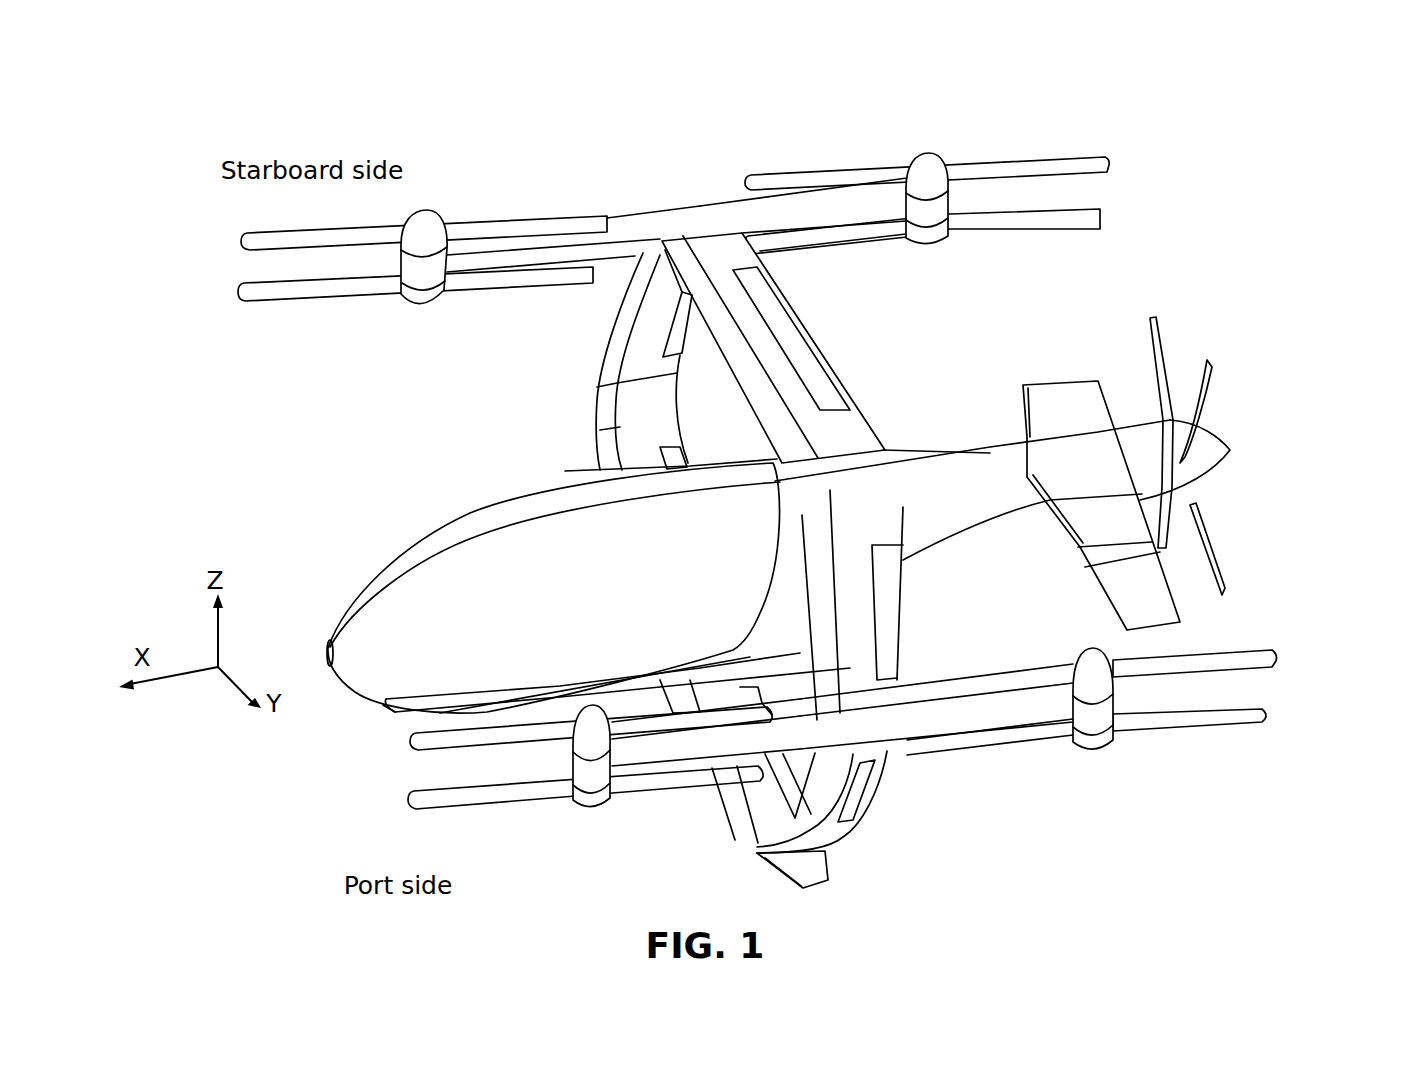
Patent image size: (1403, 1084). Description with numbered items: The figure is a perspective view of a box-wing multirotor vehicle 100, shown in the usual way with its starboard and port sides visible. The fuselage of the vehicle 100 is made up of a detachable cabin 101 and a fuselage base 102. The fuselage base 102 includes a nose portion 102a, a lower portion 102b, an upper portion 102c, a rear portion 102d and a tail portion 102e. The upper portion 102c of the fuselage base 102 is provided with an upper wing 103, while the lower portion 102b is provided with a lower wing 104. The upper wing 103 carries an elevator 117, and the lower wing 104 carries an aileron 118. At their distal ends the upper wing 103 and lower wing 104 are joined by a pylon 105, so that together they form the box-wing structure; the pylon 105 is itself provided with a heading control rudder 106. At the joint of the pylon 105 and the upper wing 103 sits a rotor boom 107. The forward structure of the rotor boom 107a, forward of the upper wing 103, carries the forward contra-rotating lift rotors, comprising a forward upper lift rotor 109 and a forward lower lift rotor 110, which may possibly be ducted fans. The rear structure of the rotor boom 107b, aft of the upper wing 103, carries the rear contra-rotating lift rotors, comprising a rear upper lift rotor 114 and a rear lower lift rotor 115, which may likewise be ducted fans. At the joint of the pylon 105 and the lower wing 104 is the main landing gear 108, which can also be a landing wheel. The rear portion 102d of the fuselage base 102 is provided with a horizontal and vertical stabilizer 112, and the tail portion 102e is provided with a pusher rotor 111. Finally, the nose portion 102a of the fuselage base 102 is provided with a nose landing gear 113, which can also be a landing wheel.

The box-wing multirotor vehicle 100 is at (530, 120).
The detachable cabin 101 is at (388, 567).
The fuselage base 102 is at (978, 338).
The nose portion 102a is at (500, 703).
The lower portion 102b is at (753, 648).
The upper portion 102c is at (863, 477).
The rear portion 102d is at (1028, 453).
The tail portion 102e is at (1148, 453).
The upper wing 103 is at (757, 262).
The lower wing 104 is at (600, 470).
The pylon 105 is at (603, 370).
The heading control rudder 106 is at (670, 345).
The rotor boom 107 is at (703, 190).
The forward structure of the rotor boom 107a is at (520, 245).
The rear structure of the rotor boom 107b is at (883, 210).
The main landing gear 108 is at (683, 427).
The forward upper lift rotor 109 is at (245, 242).
The forward lower lift rotor 110 is at (240, 292).
The pusher rotor 111 is at (1207, 527).
The horizontal and vertical stabilizer 112 is at (1047, 380).
The nose landing gear 113 is at (470, 706).
The rear upper lift rotor 114 is at (1108, 167).
The rear lower lift rotor 115 is at (1102, 218).
The elevator 117 is at (822, 372).
The aileron 118 is at (660, 462).